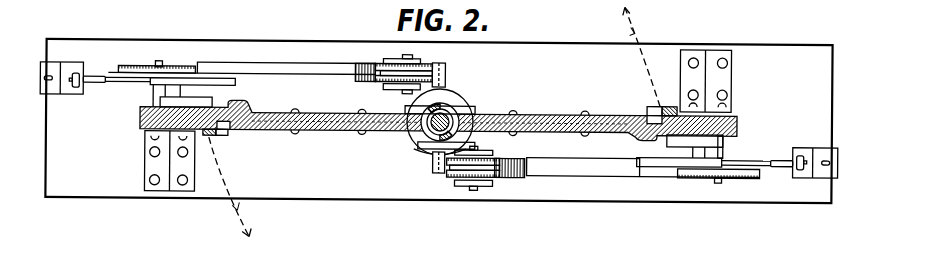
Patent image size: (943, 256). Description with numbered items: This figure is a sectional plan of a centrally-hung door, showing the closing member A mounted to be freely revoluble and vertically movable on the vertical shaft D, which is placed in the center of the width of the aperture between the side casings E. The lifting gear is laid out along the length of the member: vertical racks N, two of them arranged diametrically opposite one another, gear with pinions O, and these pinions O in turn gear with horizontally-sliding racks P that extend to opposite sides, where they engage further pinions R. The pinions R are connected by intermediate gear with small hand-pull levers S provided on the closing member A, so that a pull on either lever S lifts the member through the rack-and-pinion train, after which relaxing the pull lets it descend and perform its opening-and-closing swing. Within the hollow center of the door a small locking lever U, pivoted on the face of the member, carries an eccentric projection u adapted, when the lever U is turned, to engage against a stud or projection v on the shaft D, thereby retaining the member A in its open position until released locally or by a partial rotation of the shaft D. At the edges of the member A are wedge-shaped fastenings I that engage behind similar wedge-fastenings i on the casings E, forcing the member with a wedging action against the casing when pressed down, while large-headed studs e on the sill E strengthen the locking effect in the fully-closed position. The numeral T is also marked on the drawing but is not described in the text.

The thumb screw T is at (113, 79).
The pinion R is at (186, 72).
The hand-pull lever S is at (656, 188).
The horizontally-sliding rack P is at (603, 190).
The side casing E is at (145, 119).
The closing member A is at (330, 131).
The wedge-shaped fastening I is at (233, 131).
The wedge-fastening i is at (223, 138).
The stud e is at (296, 110).
The vertical shaft D is at (453, 112).
The stud or projection v is at (405, 109).
The eccentric projection u is at (476, 146).
The locking lever U is at (430, 151).
The vertical rack N is at (446, 75).
The pinion O is at (430, 65).